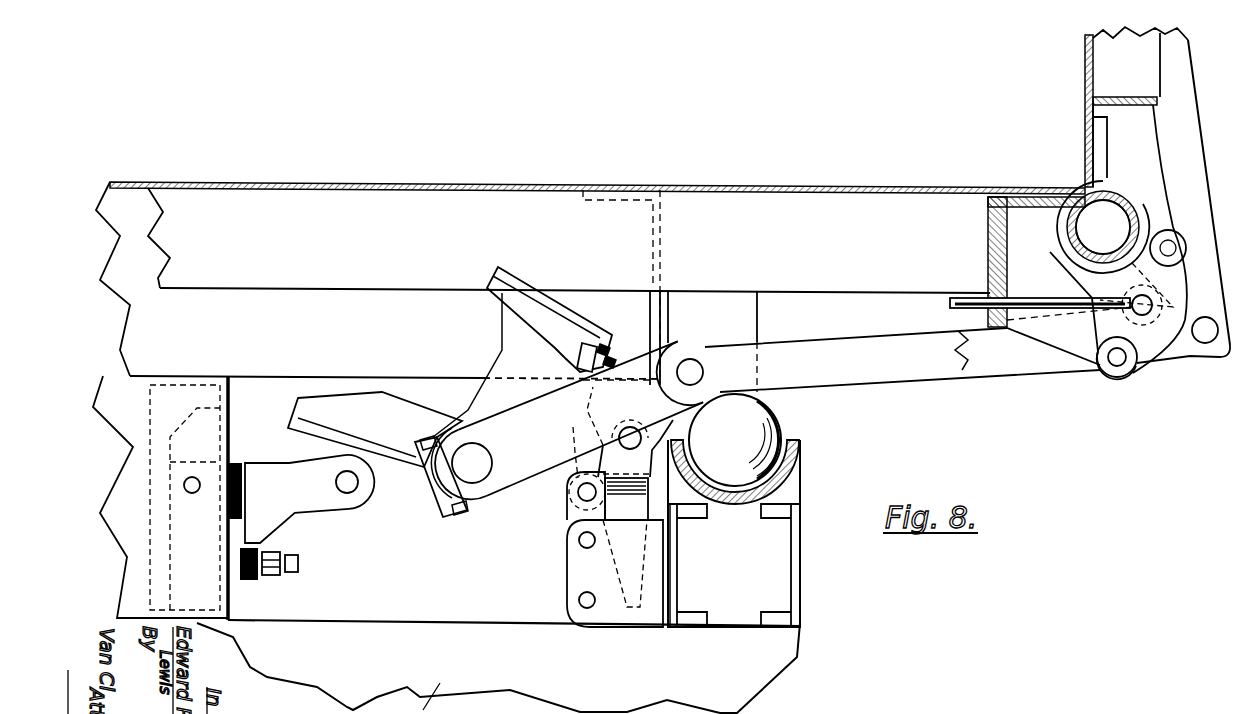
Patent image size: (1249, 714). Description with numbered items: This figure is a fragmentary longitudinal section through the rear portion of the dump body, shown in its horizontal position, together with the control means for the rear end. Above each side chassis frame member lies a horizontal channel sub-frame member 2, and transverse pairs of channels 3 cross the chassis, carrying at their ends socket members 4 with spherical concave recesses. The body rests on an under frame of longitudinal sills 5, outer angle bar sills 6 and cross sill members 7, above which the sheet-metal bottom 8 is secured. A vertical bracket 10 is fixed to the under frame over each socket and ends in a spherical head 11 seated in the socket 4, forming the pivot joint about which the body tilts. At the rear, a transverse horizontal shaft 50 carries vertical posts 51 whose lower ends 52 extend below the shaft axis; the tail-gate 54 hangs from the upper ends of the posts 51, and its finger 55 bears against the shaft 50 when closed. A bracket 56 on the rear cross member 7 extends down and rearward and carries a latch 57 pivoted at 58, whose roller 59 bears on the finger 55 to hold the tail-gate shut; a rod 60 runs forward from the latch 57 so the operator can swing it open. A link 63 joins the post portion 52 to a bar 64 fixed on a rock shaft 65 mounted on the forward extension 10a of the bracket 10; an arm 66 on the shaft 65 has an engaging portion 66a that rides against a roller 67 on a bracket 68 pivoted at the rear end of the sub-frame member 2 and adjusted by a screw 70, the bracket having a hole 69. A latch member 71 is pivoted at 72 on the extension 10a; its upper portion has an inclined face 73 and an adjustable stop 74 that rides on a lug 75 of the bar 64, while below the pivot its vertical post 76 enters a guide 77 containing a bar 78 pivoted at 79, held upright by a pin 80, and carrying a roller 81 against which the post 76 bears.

The channel sub-frame member 2 is at (127, 480).
The transverse channels 3 is at (793, 550).
The socket member 4 is at (801, 450).
The longitudinal sill 5 is at (127, 288).
The angle bar sill 6 is at (352, 275).
The cross sill member 7 is at (655, 313).
The bottom 8 is at (753, 184).
The vertical bracket 10 is at (757, 313).
The forward extension of bracket 10a is at (502, 350).
The spherical head 11 is at (775, 422).
The transverse horizontal shaft 50 is at (1140, 213).
The vertical post 51 is at (1178, 49).
The lower end of post 52 is at (1228, 359).
The tail-gate 54 is at (1087, 75).
The finger 55 is at (1150, 160).
The bracket 56 is at (1058, 332).
The latch 57 is at (1152, 335).
The pivot 58 is at (1115, 360).
The roller 59 is at (1182, 243).
The rod 60 is at (1022, 303).
The link 63 is at (937, 368).
The bar 64 is at (563, 452).
The rock shaft 65 is at (480, 470).
The arm 66 is at (412, 470).
The engaging portion 66a is at (353, 423).
The roller 67 is at (353, 505).
The bracket 68 is at (260, 475).
The hole 69 is at (188, 488).
The screw 70 is at (275, 572).
The latch member 71 is at (563, 357).
The pivot 72 is at (622, 438).
The inclined face 73 is at (533, 283).
The adjustable stop 74 is at (613, 347).
The lug 75 is at (667, 332).
The vertical post 76 is at (647, 505).
The guide 77 is at (587, 575).
The bar 78 is at (573, 513).
The pivot 79 is at (587, 606).
The pin 80 is at (595, 543).
The roller 81 is at (574, 428).